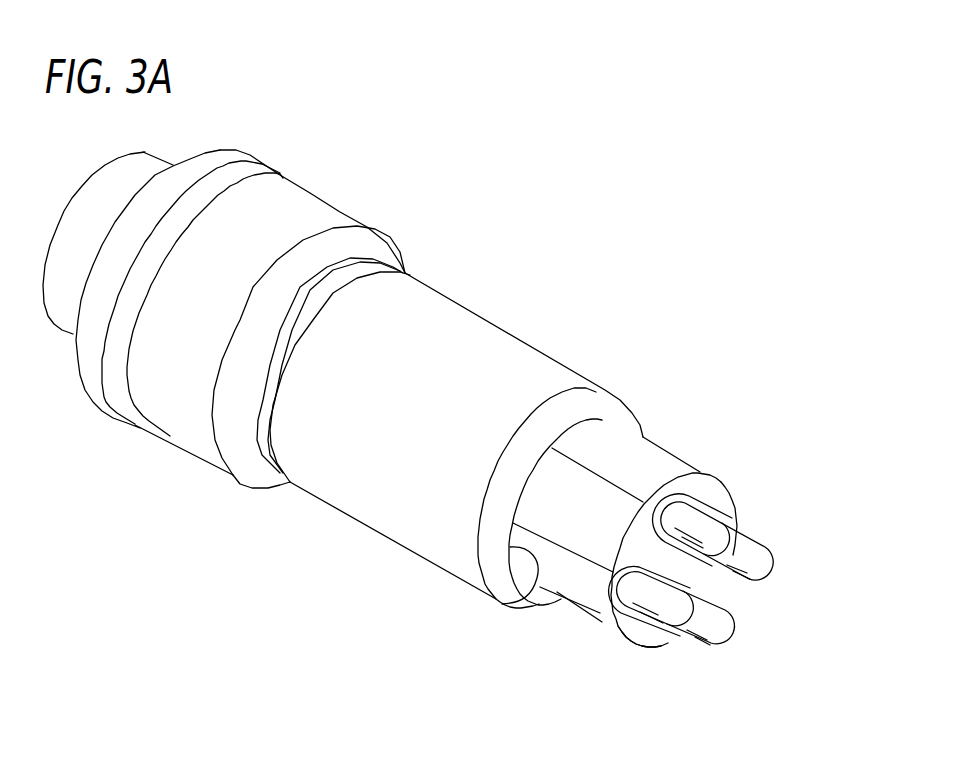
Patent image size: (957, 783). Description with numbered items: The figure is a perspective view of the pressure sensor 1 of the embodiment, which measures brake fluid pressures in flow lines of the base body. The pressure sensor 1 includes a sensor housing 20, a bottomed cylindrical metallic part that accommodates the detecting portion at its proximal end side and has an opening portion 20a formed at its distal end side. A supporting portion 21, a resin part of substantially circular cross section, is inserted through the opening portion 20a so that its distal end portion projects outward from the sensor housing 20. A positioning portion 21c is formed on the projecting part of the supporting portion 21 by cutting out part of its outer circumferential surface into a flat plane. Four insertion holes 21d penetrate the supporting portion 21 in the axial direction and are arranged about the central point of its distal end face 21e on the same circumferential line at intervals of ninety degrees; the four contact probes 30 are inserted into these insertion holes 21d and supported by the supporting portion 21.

The pressure sensor 1 is at (406, 159).
The sensor housing 20 is at (487, 314).
The opening portion 20a is at (500, 600).
The supporting portion 21 is at (650, 470).
The positioning portion 21c is at (603, 533).
The insertion holes 21d is at (718, 482).
The distal end face 21e is at (650, 637).
The contact probes 30 is at (757, 568).